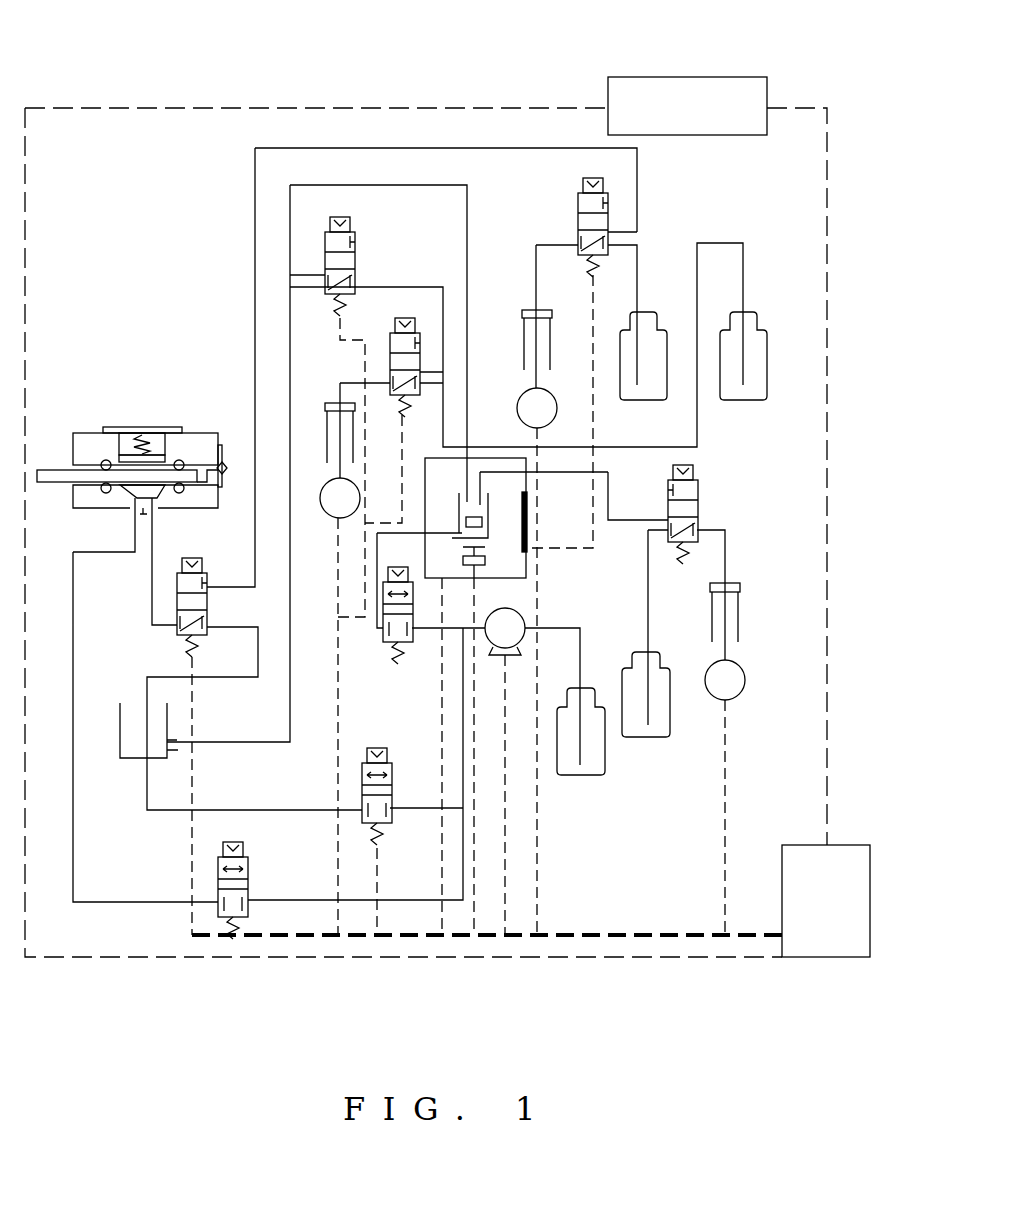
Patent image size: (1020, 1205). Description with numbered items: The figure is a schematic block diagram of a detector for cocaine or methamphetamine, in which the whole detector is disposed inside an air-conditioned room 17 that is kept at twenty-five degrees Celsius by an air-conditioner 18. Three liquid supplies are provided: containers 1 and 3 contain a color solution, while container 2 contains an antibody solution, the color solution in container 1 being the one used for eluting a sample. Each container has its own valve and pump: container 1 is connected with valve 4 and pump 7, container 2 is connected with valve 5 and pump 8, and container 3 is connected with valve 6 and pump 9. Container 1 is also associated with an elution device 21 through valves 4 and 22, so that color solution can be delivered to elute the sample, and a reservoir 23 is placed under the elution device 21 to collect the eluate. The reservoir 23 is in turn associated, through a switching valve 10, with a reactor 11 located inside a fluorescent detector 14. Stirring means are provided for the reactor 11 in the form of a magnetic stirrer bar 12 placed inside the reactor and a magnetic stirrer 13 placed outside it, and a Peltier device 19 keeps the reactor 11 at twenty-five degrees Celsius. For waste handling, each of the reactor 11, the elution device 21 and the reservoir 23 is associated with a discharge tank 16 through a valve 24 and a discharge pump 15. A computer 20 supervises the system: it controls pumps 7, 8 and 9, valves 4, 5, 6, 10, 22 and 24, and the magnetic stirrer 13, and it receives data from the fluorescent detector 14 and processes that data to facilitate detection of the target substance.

The container 1 is at (645, 400).
The container 2 is at (670, 720).
The container 3 is at (745, 400).
The valve 4 is at (578, 207).
The valve 5 is at (697, 489).
The valve 6 is at (390, 345).
The pump 7 is at (552, 356).
The pump 8 is at (740, 625).
The pump 9 is at (352, 447).
The switching valve 10 is at (332, 250).
The reactor 11 is at (505, 500).
The magnetic stirrer bar 12 is at (470, 520).
The magnetic stirrer 13 is at (484, 560).
The fluorescent detector 14 is at (531, 586).
The discharge pump 15 is at (505, 650).
The discharge tank 16 is at (603, 768).
The air-conditioned room 17 is at (828, 125).
The air-conditioner 18 is at (727, 82).
The Peltier device 19 is at (532, 512).
The computer 20 is at (830, 938).
The elution device 21 is at (140, 427).
The valve 22 is at (205, 578).
The reservoir 23 is at (120, 708).
The valve 24 is at (392, 644).